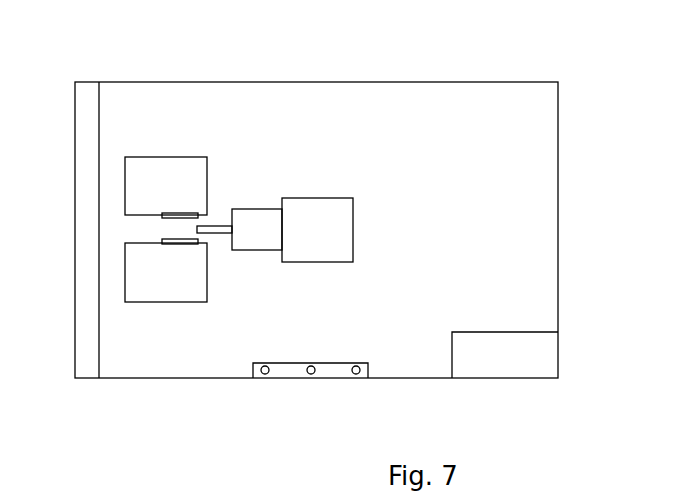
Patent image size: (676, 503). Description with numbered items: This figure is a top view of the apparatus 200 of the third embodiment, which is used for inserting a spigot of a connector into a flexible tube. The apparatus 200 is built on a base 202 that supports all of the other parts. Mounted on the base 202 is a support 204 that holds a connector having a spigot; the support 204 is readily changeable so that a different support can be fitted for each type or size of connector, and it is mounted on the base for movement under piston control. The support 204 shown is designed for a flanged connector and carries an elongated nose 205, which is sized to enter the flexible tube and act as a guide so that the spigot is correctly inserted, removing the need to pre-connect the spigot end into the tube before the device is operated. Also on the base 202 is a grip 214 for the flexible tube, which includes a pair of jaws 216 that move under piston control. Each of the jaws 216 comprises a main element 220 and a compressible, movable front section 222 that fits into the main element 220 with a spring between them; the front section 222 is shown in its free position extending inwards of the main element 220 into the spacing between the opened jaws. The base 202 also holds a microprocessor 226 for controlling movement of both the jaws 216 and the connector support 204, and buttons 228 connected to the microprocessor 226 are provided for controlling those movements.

The apparatus 200 is at (211, 378).
The base 202 is at (558, 278).
The support 204 is at (327, 205).
The elongated nose 205 is at (218, 226).
The grip 214 is at (131, 230).
The jaws 216 is at (125, 268).
The main element 220 is at (148, 183).
The front section 222 is at (180, 239).
The microprocessor 226 is at (505, 355).
The buttons 228 is at (355, 378).